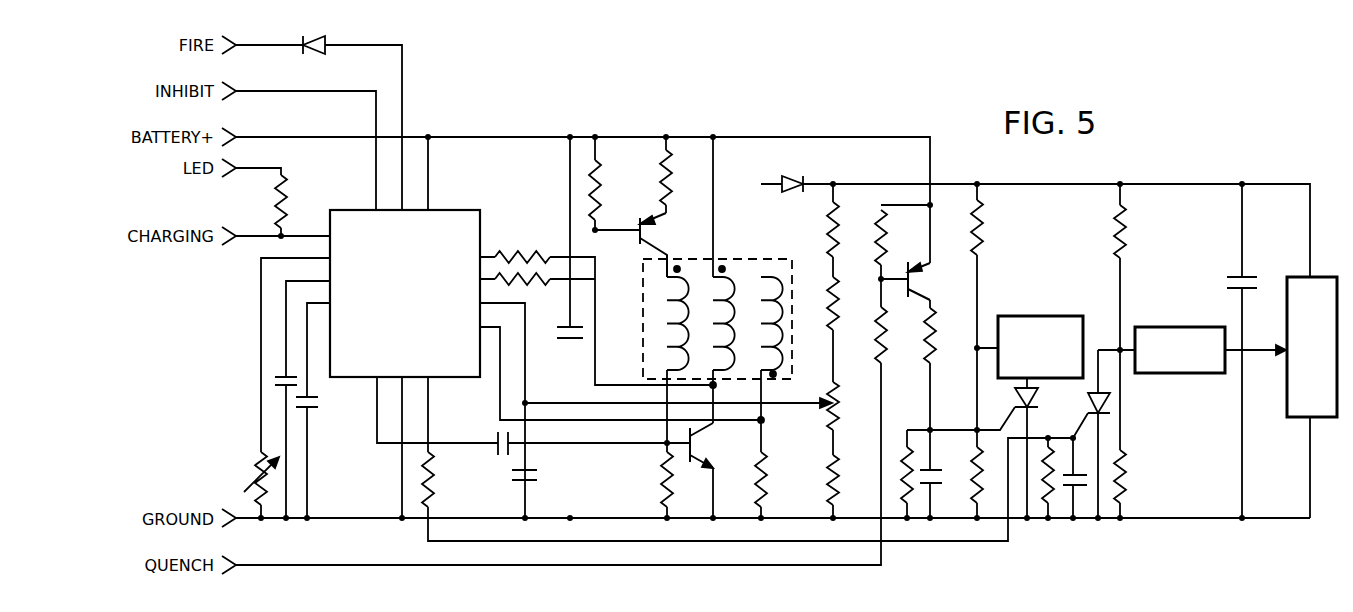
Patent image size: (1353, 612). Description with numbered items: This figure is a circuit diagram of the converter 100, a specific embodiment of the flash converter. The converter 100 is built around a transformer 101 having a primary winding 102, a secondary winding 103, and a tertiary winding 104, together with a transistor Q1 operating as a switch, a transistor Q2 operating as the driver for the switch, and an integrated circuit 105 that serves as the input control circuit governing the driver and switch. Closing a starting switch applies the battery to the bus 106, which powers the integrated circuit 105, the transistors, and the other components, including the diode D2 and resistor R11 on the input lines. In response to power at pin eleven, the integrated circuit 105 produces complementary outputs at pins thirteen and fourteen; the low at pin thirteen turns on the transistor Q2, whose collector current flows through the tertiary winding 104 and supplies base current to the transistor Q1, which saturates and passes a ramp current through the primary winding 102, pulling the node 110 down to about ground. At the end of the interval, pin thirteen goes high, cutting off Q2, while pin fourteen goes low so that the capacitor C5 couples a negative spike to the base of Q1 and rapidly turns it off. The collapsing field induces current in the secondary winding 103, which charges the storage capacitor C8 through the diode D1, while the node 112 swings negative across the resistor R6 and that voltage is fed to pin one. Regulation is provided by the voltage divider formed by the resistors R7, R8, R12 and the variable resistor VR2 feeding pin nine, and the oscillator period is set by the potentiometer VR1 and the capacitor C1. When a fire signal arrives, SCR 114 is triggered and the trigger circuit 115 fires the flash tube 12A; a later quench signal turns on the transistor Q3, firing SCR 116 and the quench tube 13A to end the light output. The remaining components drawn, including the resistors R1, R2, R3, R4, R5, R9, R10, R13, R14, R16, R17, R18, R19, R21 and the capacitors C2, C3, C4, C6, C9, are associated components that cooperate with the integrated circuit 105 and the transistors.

The converter 100 is at (458, 180).
The integrated circuit 105 is at (479, 223).
The bus 106 is at (285, 137).
The transformer 101 is at (717, 303).
The primary winding 102 is at (741, 269).
The secondary winding 103 is at (785, 344).
The tertiary winding 104 is at (666, 304).
The node 110 is at (715, 386).
The node 112 is at (764, 420).
The quench tube 13A is at (1025, 316).
The trigger circuit 115 is at (1158, 327).
The SCR 116 is at (1037, 399).
The SCR 114 is at (1112, 403).
The flash tube 12A is at (1287, 417).
The diode D1 is at (794, 172).
The diode D2 is at (314, 56).
The resistor R1 is at (440, 479).
The resistor R2 is at (1046, 497).
The resistor R3 is at (522, 290).
The resistor R4 is at (522, 247).
The resistor R5 is at (651, 479).
The resistor R6 is at (774, 479).
The resistor R7 is at (819, 229).
The resistor R8 is at (846, 303).
The resistor R9 is at (1134, 231).
The resistor R10 is at (1138, 476).
The resistor R11 is at (299, 201).
The resistor R12 is at (851, 480).
The resistor R13 is at (684, 177).
The resistor R14 is at (897, 237).
The resistor R16 is at (947, 335).
The resistor R17 is at (900, 455).
The resistor R18 is at (995, 227).
The resistor R19 is at (961, 475).
The resistor R21 is at (614, 190).
The potentiometer VR1 is at (245, 478).
The variable resistor VR2 is at (850, 406).
The capacitor C1 is at (281, 368).
The capacitor C2 is at (937, 487).
The capacitor C3 is at (532, 486).
The capacitor C4 is at (561, 344).
The capacitor C5 is at (488, 443).
The capacitor C6 is at (316, 415).
The storage capacitor C8 is at (1247, 270).
The capacitor C9 is at (1080, 491).
The transistor Q1 is at (705, 445).
The transistor Q2 is at (657, 245).
The transistor Q3 is at (925, 281).